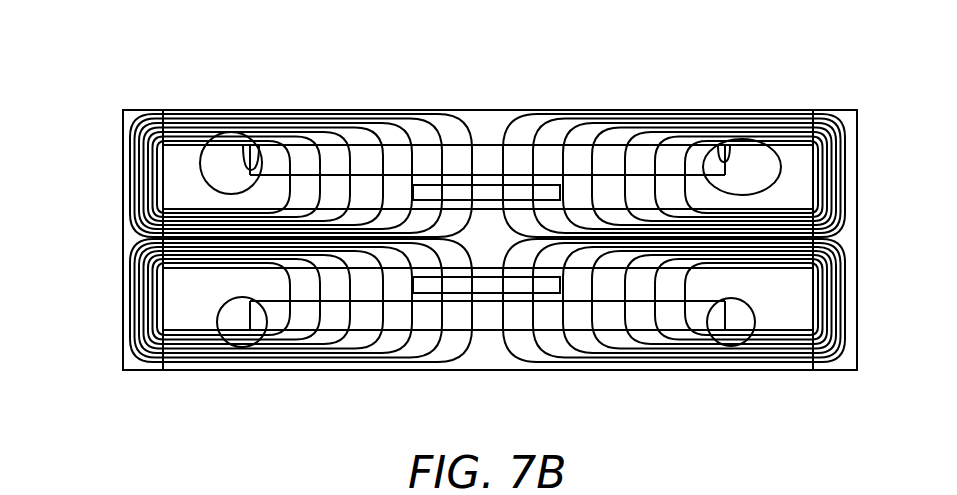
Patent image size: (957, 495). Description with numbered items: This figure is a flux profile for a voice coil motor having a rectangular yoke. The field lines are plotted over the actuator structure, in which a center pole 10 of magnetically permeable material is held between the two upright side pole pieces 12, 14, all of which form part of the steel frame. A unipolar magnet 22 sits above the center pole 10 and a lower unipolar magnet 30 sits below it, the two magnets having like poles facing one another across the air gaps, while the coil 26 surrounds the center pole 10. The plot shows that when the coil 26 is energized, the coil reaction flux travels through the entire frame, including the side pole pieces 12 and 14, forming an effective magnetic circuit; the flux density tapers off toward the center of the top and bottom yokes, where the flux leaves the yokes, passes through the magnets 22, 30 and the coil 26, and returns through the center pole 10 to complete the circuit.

The center pole 10 is at (441, 240).
The upright pole piece 12 is at (490, 211).
The upright pole piece 14 is at (858, 214).
The unipolar magnet 22 is at (487, 120).
The coil 26 is at (452, 243).
The lower unipolar magnet 30 is at (487, 366).